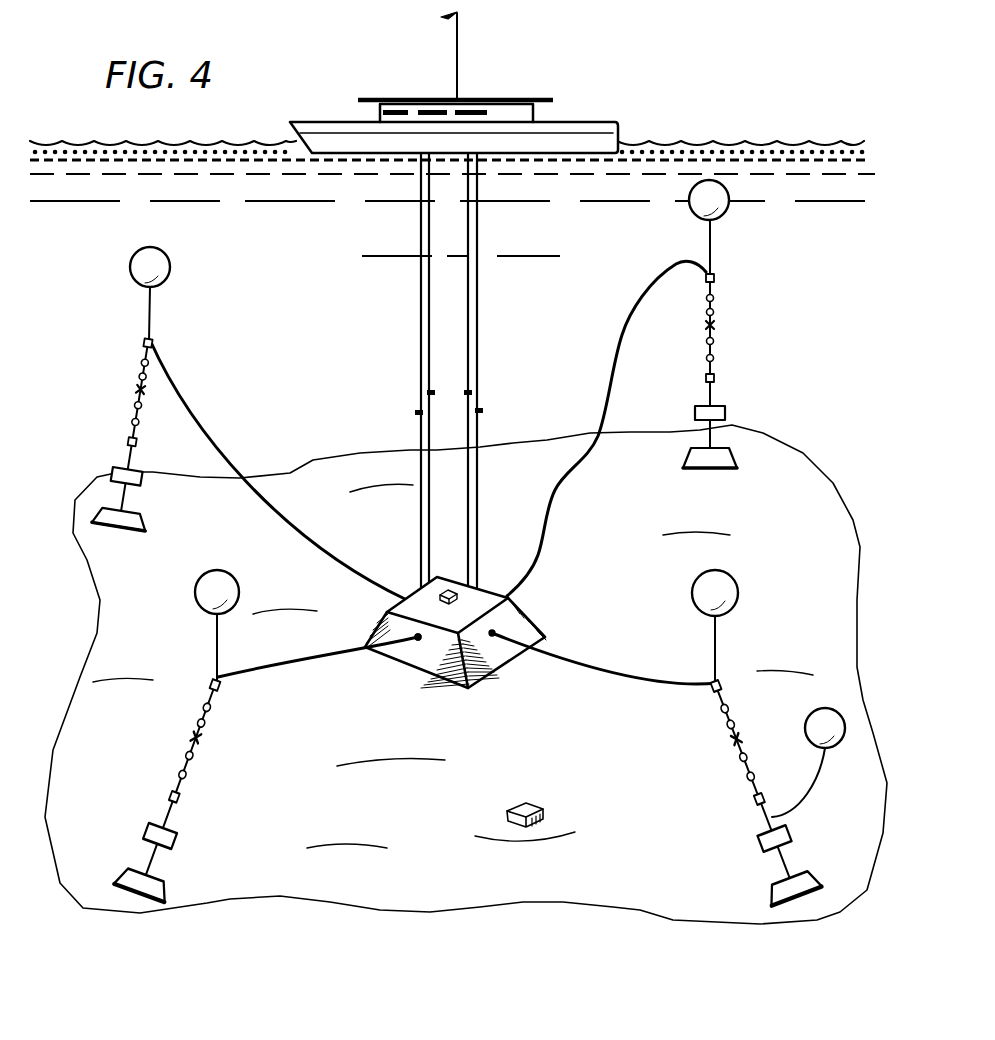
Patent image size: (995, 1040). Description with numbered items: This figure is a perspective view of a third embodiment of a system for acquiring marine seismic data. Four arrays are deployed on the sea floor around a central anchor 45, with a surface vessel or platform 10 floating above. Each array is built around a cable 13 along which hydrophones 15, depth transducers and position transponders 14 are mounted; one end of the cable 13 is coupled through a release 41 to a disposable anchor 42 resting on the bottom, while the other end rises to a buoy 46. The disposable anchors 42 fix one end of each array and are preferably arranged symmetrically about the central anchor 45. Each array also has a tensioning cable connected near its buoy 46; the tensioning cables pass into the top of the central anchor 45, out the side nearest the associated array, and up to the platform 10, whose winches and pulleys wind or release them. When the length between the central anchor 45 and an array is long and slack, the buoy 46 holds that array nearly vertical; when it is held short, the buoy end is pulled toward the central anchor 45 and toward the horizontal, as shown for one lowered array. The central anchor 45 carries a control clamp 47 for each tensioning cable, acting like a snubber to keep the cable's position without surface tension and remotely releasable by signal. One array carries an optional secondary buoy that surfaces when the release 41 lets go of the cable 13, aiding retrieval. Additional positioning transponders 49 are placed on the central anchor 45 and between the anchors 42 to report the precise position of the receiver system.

The platform 10 is at (605, 122).
The cable 13 is at (706, 377).
The position transponders 14 is at (130, 440).
The hydrophones 15 is at (140, 373).
The release 41 is at (142, 480).
The disposable anchor 42 is at (147, 517).
The central anchor 45 is at (528, 613).
The buoy 46 is at (128, 268).
The control clamp 47 is at (416, 641).
The positioning transponders 49 is at (445, 587).